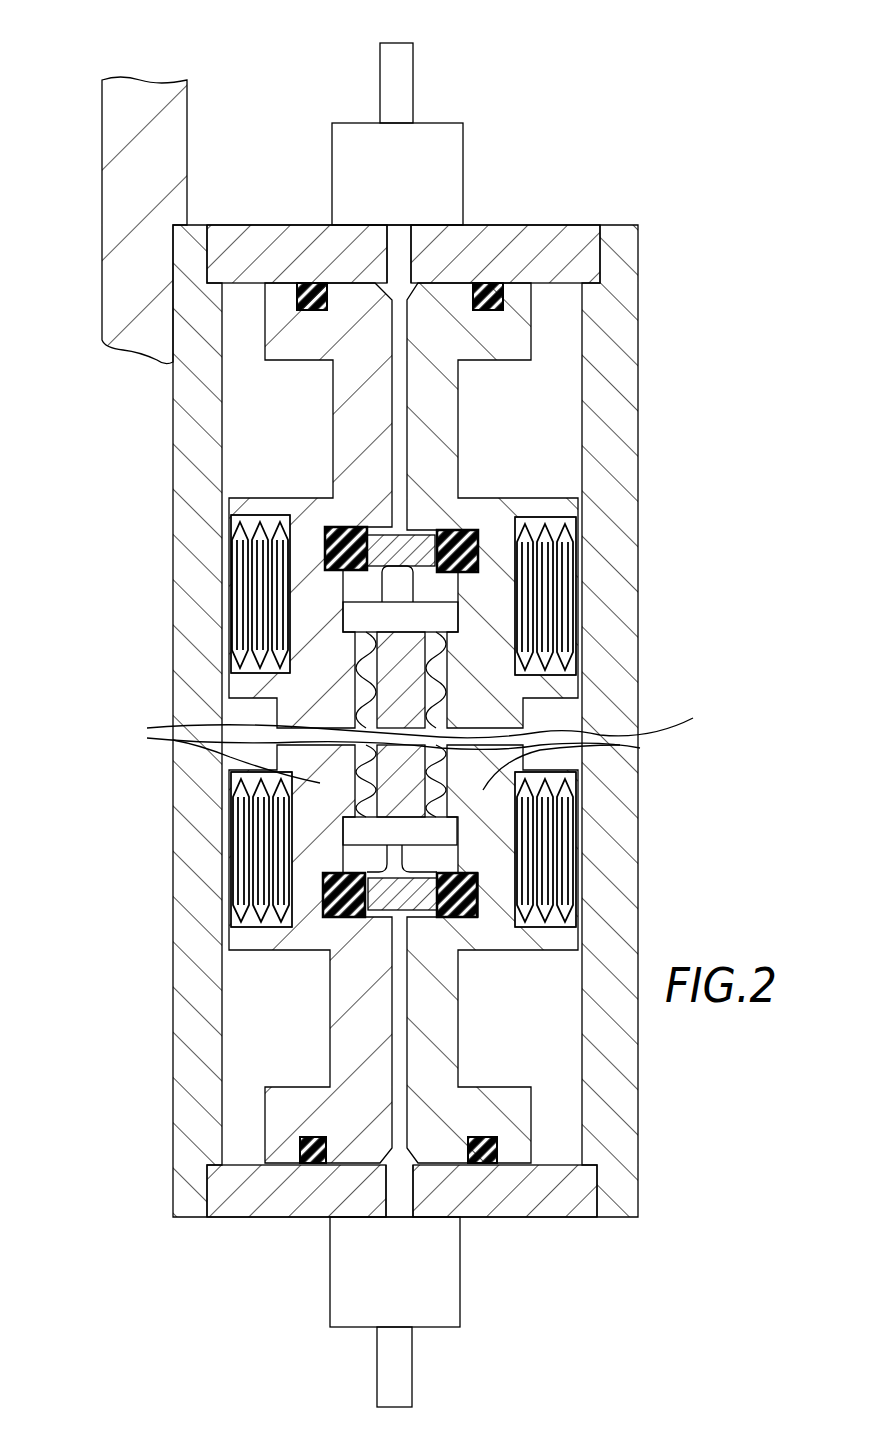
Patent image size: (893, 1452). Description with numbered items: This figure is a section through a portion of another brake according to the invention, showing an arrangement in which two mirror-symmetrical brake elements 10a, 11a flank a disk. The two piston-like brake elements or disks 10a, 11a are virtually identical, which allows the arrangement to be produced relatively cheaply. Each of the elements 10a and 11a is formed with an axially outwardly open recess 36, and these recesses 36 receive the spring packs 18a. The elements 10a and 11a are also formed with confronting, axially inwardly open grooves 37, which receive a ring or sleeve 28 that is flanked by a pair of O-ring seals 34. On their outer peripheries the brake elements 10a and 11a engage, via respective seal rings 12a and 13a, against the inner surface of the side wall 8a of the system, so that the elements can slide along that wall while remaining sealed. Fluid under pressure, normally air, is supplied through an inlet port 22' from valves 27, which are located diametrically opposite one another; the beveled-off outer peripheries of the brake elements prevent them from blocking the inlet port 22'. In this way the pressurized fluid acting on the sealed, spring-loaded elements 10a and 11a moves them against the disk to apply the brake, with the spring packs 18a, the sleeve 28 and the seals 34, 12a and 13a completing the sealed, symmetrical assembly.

The side wall 8a is at (252, 238).
The brake element 10a is at (320, 660).
The brake element 11a is at (473, 663).
The seal ring 12a is at (310, 277).
The seal ring 13a is at (482, 282).
The spring pack 18a is at (235, 587).
The inlet port 22' is at (447, 725).
The valve 27 is at (427, 145).
The ring or sleeve 28 is at (387, 527).
The O-ring seal 34 is at (467, 530).
The recess 36 is at (240, 525).
The groove 37 is at (490, 580).